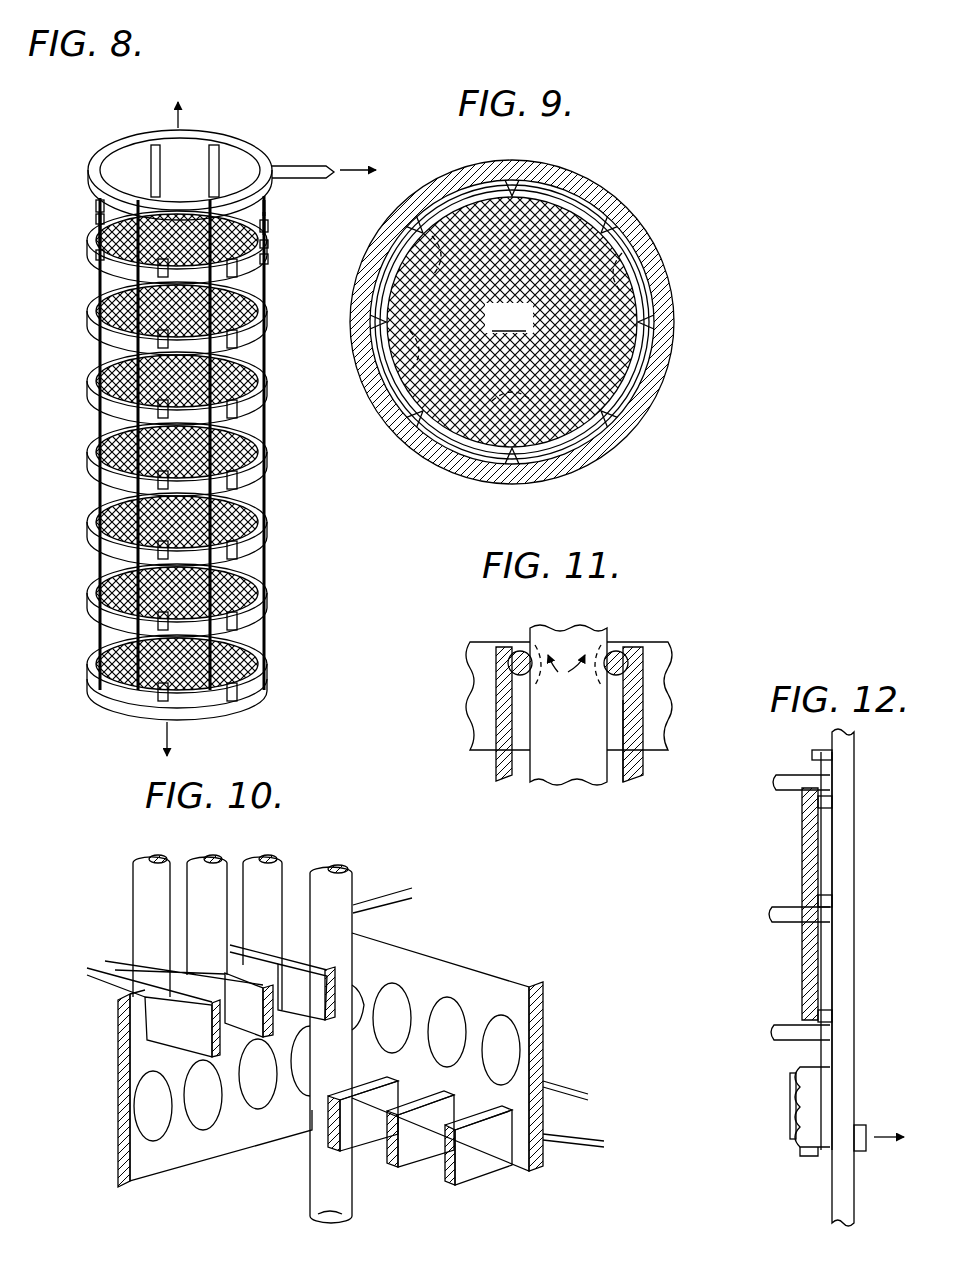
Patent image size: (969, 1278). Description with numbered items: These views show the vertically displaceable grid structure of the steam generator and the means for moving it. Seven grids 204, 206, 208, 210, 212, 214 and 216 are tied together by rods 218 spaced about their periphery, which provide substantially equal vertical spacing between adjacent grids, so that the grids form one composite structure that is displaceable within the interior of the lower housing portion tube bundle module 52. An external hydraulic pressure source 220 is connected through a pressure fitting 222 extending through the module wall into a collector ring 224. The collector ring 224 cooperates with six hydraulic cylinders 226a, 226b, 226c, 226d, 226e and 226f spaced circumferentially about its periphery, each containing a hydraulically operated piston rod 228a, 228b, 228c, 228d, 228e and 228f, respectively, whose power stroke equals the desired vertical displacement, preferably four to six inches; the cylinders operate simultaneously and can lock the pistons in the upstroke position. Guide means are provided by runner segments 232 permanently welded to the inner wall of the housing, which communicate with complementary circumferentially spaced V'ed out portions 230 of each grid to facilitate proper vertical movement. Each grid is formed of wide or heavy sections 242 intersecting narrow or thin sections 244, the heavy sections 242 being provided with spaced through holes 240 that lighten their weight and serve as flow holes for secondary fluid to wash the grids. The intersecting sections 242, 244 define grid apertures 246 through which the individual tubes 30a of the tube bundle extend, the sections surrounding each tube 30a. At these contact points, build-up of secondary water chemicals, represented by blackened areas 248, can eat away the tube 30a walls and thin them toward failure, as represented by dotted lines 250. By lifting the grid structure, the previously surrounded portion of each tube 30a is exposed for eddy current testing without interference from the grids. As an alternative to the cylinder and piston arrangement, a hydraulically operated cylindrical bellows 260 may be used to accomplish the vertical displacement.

In FIG. 11, the tube 30a is at (578, 625).
In FIG. 10, the tube 30a is at (140, 882).
In FIG. 9, the lower housing portion tube bundle module 52 is at (626, 185).
In FIG. 12, the lower housing portion tube bundle module 52 is at (859, 985).
In FIG. 8, the grid 204 is at (92, 234).
In FIG. 12, the grid 204 is at (790, 1033).
In FIG. 8, the grid 206 is at (92, 327).
In FIG. 12, the grid 206 is at (790, 915).
In FIG. 8, the grid 208 is at (90, 412).
In FIG. 9, the grid 208 is at (596, 193).
In FIG. 12, the grid 208 is at (790, 780).
In FIG. 8, the grid 210 is at (88, 462).
In FIG. 8, the grid 212 is at (88, 516).
In FIG. 8, the grid 214 is at (88, 582).
In FIG. 8, the grid 216 is at (86, 684).
In FIG. 8, the rod 218 is at (268, 300).
In FIG. 8, the external hydraulic pressure source 220 is at (350, 165).
In FIG. 12, the external hydraulic pressure source 220 is at (896, 1134).
In FIG. 8, the pressure fitting 222 is at (286, 165).
In FIG. 8, the collector ring 224 is at (219, 116).
In FIG. 8, the hydraulic cylinder 226a is at (151, 105).
In FIG. 8, the hydraulic cylinder 226b is at (100, 192).
In FIG. 8, the hydraulic cylinder 226c is at (96, 220).
In FIG. 8, the hydraulic cylinder 226d is at (265, 246).
In FIG. 8, the hydraulic cylinder 226e is at (268, 206).
In FIG. 8, the hydraulic cylinder 226f is at (228, 152).
In FIG. 8, the piston rod 228a is at (186, 160).
In FIG. 8, the piston rod 228b is at (96, 205).
In FIG. 8, the piston rod 228c is at (100, 258).
In FIG. 8, the piston rod 228d is at (262, 262).
In FIG. 8, the piston rod 228e is at (266, 232).
In FIG. 8, the piston rod 228f is at (240, 162).
In FIG. 9, the V'ed out portion 230 is at (448, 240).
In FIG. 9, the runner segment 232 is at (418, 212).
In FIG. 12, the runner segment 232 is at (822, 803).
In FIG. 11, the through hole 240 is at (615, 732).
In FIG. 10, the through hole 240 is at (503, 1018).
In FIG. 11, the wide section 242 is at (620, 640).
In FIG. 10, the wide section 242 is at (463, 962).
In FIG. 11, the narrow section 244 is at (490, 700).
In FIG. 10, the narrow section 244 is at (100, 1004).
In FIG. 11, the grid aperture 246 is at (519, 648).
In FIG. 10, the grid aperture 246 is at (160, 858).
In FIG. 11, the blackened area 248 is at (509, 652).
In FIG. 11, the dotted lines 250 is at (574, 672).
In FIG. 12, the hydraulically operated cylindrical bellows 260 is at (830, 1092).